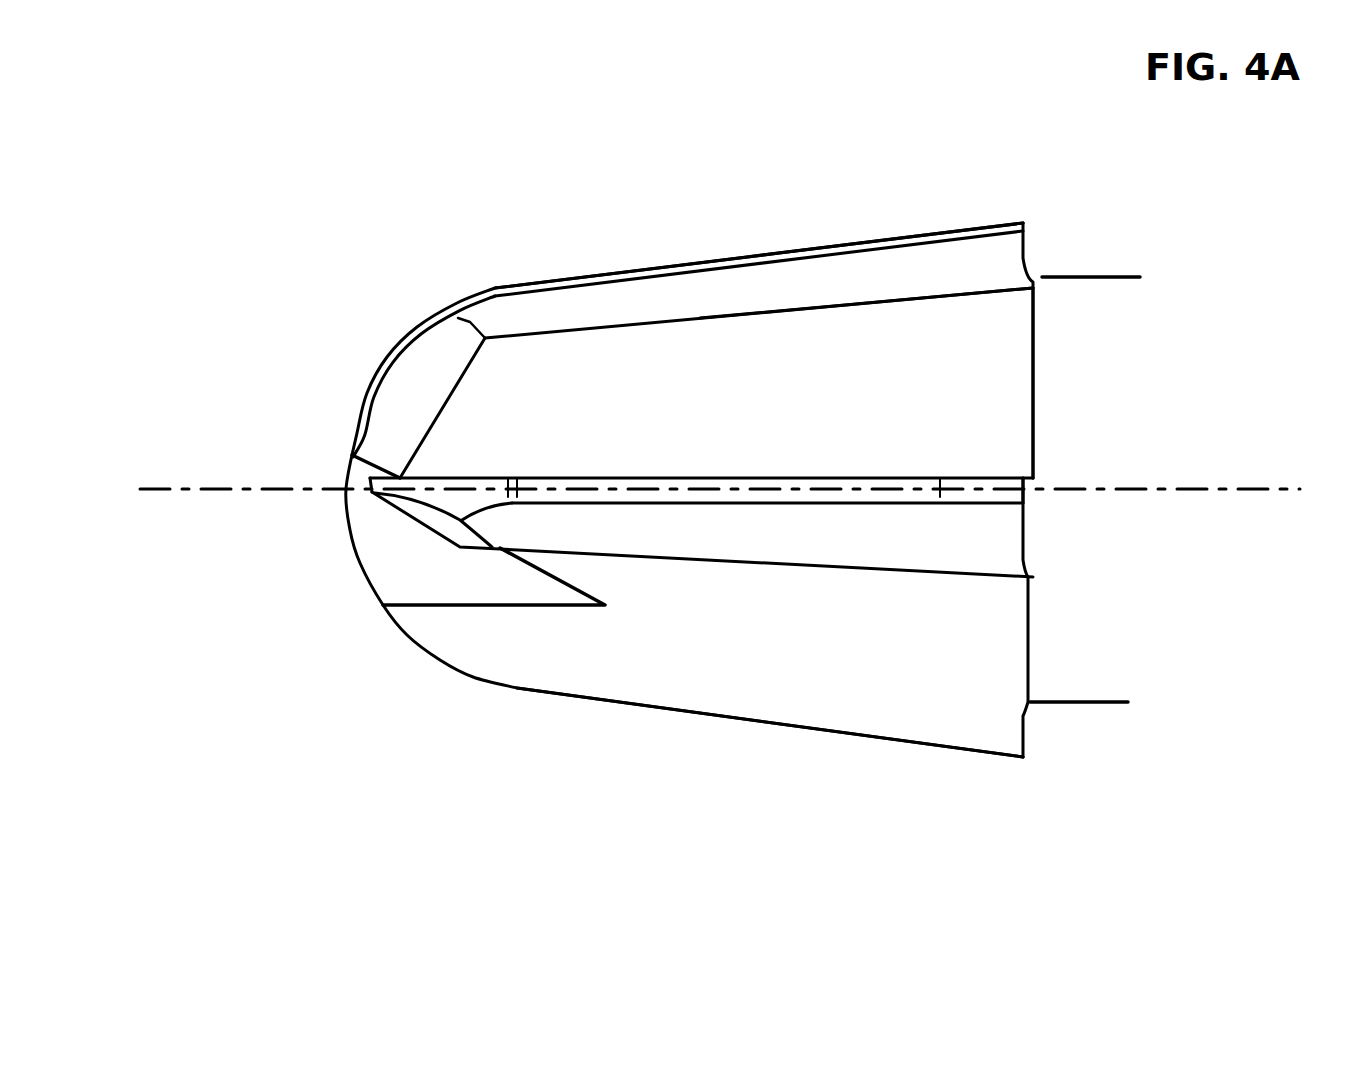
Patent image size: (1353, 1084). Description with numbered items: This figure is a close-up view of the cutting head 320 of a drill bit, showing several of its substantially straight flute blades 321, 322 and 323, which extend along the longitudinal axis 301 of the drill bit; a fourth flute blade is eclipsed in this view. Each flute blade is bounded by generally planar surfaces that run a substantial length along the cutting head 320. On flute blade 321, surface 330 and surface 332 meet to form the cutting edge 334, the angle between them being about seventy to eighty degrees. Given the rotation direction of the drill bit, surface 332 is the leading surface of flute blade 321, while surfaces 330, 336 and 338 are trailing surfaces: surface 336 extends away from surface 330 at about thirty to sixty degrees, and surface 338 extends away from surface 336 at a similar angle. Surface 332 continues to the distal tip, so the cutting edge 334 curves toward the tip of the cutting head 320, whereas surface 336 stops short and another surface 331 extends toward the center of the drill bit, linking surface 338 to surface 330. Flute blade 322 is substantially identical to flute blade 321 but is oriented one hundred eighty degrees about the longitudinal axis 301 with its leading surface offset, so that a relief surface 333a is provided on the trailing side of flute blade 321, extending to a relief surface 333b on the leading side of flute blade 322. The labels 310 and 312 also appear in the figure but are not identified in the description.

The longitudinal axis 301 is at (1275, 485).
The nozzle assembly 310 is at (492, 215).
The connector portion 312 is at (1152, 838).
The cutting head 320 is at (1022, 838).
The flute blade 321 is at (703, 260).
The flute blade 322 is at (513, 690).
The flute blade 323 is at (565, 520).
The surface 330 is at (785, 252).
The surface 331 is at (403, 427).
The surface 332 is at (985, 477).
The relief surface 333a is at (363, 478).
The relief surface 333b is at (430, 572).
The cutting edge 334 is at (722, 260).
The surface 336 is at (822, 290).
The surface 338 is at (885, 355).